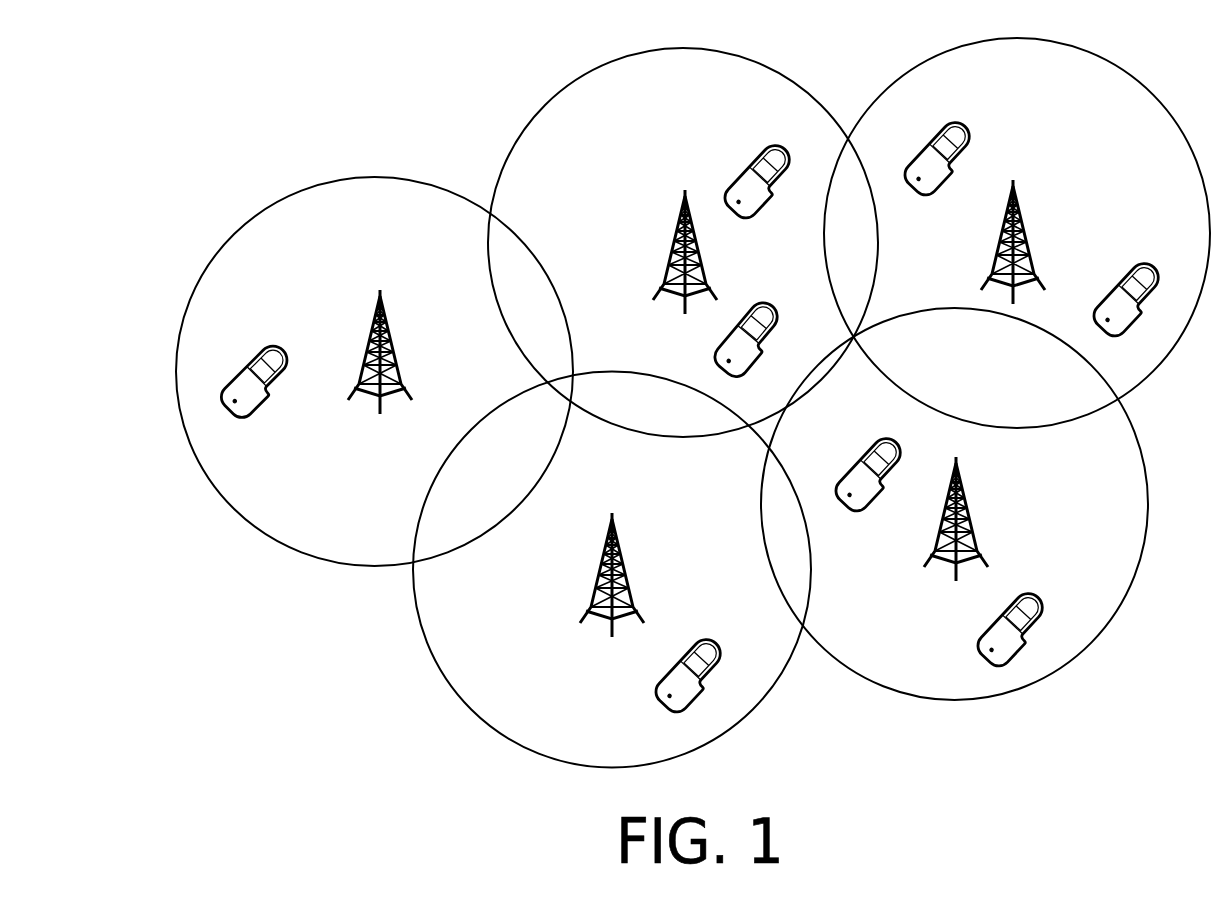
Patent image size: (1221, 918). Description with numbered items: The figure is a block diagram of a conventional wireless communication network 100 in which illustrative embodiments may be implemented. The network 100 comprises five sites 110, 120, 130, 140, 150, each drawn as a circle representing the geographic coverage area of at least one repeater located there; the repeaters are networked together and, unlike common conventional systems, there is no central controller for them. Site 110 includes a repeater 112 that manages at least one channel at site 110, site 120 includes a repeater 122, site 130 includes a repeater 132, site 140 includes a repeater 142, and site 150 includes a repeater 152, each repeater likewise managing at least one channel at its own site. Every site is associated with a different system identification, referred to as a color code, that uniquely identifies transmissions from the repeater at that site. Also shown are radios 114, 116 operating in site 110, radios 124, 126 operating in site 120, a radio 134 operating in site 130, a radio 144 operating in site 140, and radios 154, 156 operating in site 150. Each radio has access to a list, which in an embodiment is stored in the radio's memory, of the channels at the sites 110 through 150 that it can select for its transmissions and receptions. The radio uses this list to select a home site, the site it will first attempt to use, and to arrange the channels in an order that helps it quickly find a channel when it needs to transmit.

The wireless communication network 100 is at (442, 99).
The site 110 is at (684, 47).
The repeater 112 is at (685, 190).
The radio 114 is at (776, 147).
The radio 116 is at (716, 356).
The site 120 is at (1011, 37).
The repeater 122 is at (1013, 180).
The radio 124 is at (964, 123).
The radio 126 is at (1145, 263).
The site 130 is at (373, 177).
The repeater 132 is at (380, 290).
The radio 134 is at (270, 348).
The site 140 is at (611, 768).
The repeater 142 is at (612, 513).
The radio 144 is at (658, 690).
The site 150 is at (951, 700).
The repeater 152 is at (956, 457).
The radio 154 is at (859, 466).
The radio 156 is at (978, 640).